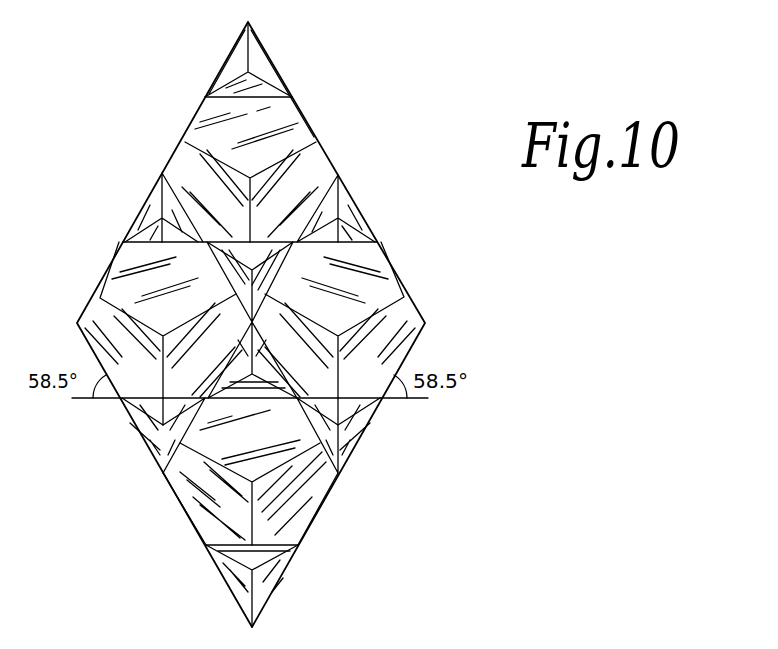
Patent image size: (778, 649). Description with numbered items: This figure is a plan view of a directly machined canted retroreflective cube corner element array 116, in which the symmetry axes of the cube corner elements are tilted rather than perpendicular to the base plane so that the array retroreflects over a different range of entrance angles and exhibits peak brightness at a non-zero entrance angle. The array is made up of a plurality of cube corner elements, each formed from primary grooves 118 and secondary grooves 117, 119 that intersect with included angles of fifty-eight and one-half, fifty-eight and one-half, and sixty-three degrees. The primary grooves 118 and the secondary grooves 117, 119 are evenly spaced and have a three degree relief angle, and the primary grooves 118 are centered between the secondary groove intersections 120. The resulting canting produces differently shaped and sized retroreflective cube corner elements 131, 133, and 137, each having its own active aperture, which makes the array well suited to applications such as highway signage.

The canted retroreflective cube corner element array 116 is at (313, 522).
The secondary groove 117 is at (313, 137).
The primary groove 118 is at (250, 97).
The secondary groove 119 is at (152, 195).
The secondary groove intersection 120 is at (334, 172).
The retroreflective cube corner element 131 is at (148, 415).
The retroreflective cube corner element 133 is at (145, 280).
The retroreflective cube corner element 137 is at (151, 232).